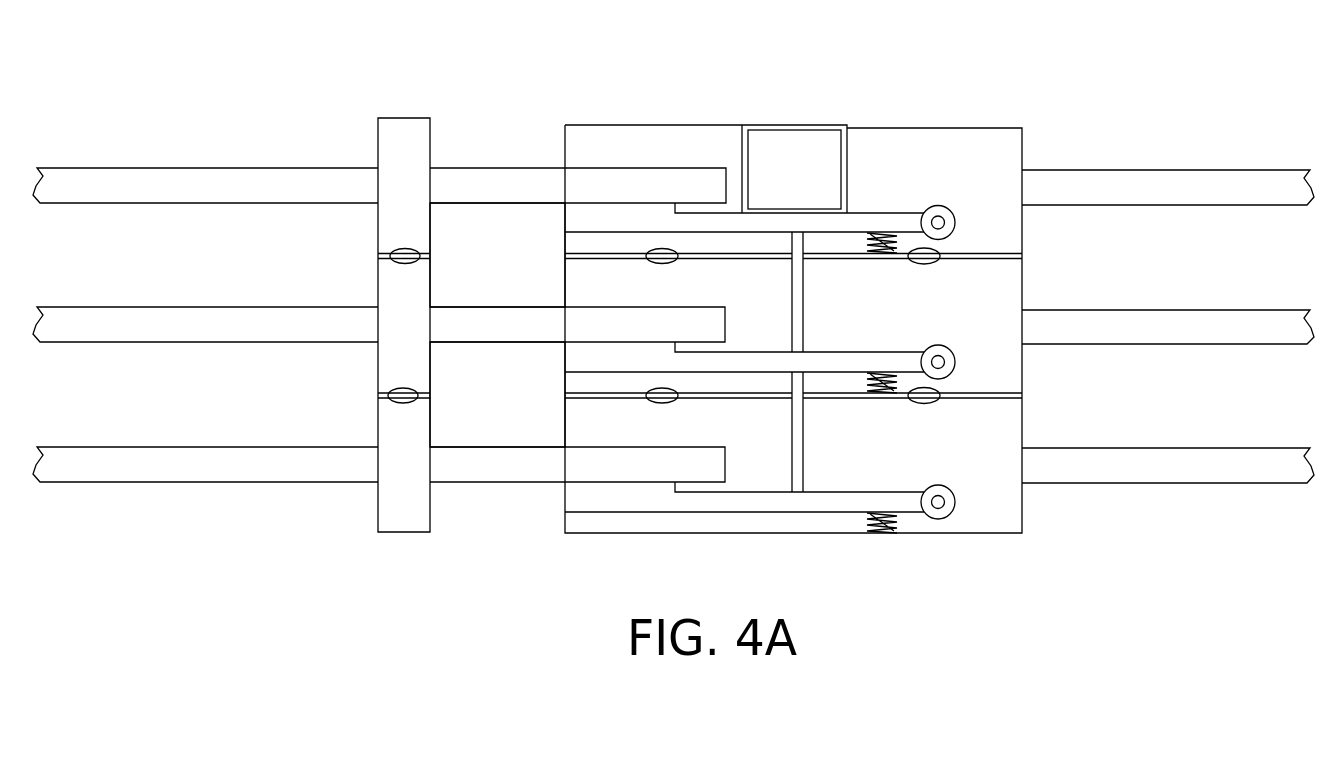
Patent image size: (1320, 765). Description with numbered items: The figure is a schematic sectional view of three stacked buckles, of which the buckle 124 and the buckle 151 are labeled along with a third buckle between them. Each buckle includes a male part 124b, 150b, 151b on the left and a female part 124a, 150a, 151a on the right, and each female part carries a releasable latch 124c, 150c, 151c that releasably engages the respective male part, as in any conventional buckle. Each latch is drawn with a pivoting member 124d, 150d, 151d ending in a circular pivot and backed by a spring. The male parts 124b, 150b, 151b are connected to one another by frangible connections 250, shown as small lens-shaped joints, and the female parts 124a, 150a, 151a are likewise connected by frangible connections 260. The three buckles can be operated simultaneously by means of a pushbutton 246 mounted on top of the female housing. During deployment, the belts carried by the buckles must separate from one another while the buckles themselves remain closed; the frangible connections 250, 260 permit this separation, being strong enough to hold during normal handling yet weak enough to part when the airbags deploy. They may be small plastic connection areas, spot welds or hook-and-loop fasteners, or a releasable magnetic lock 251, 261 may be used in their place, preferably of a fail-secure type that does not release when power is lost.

The buckle 124 is at (917, 562).
The female part 124a is at (992, 443).
The male part 124b is at (388, 503).
The releasable latch 124c is at (673, 475).
The fourth portion of third contact 124d is at (877, 512).
The female part 150a is at (992, 306).
The male part 150b is at (377, 362).
The releasable latch 150c is at (673, 335).
The fourth portion of second contact 150d is at (880, 380).
The buckle 151 is at (1000, 125).
The female part 151a is at (1000, 170).
The male part 151b is at (395, 153).
The releasable latch 151c is at (673, 195).
The fourth portion of first contact 151d is at (880, 232).
The pushbutton 246 is at (796, 147).
The frangible connections 250 is at (393, 252).
The releasable magnetic lock 251 is at (574, 332).
The frangible connections 260 is at (1037, 367).
The releasable magnetic lock 261 is at (940, 250).